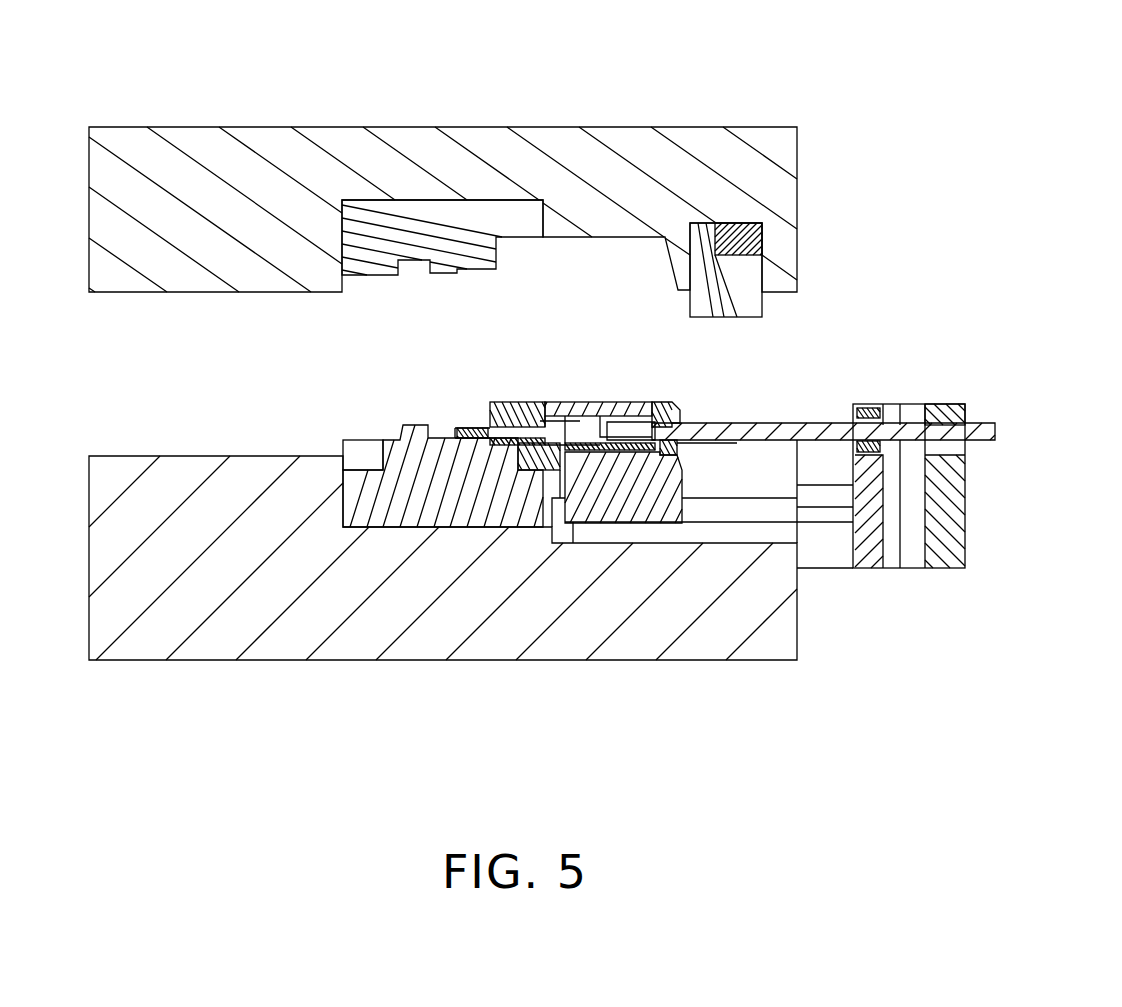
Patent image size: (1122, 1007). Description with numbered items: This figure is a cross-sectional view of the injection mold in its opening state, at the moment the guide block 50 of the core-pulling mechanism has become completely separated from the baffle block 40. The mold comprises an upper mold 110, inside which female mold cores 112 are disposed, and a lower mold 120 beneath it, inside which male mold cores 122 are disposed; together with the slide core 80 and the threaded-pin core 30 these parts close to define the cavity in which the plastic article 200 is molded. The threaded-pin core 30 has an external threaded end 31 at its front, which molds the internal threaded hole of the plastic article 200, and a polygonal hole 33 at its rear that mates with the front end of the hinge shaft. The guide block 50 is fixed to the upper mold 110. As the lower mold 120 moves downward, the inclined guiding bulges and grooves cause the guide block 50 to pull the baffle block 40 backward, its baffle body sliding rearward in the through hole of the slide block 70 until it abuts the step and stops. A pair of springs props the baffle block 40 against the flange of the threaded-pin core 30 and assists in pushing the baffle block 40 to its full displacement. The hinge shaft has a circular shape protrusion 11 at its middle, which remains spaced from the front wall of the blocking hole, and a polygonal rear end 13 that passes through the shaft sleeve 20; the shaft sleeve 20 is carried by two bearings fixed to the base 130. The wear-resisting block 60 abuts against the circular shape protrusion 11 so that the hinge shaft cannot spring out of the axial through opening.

The upper mold 110 is at (212, 198).
The female mold cores 112 is at (447, 237).
The guide block 50 is at (738, 226).
The lower mold 120 is at (115, 622).
The male mold cores 122 is at (402, 517).
The slide block 70 is at (640, 503).
The slide core 80 is at (528, 402).
The baffle block 40 is at (596, 402).
The wear-resisting block 60 is at (658, 403).
The rear end 13 is at (808, 424).
The circular shape protrusion 11 is at (652, 440).
The base 130 is at (946, 530).
The shaft sleeve 20 is at (918, 423).
The plastic article 200 is at (453, 430).
The external threaded end 31 is at (487, 428).
The threaded-pin core 30 is at (530, 442).
The polygonal hole 33 is at (560, 433).